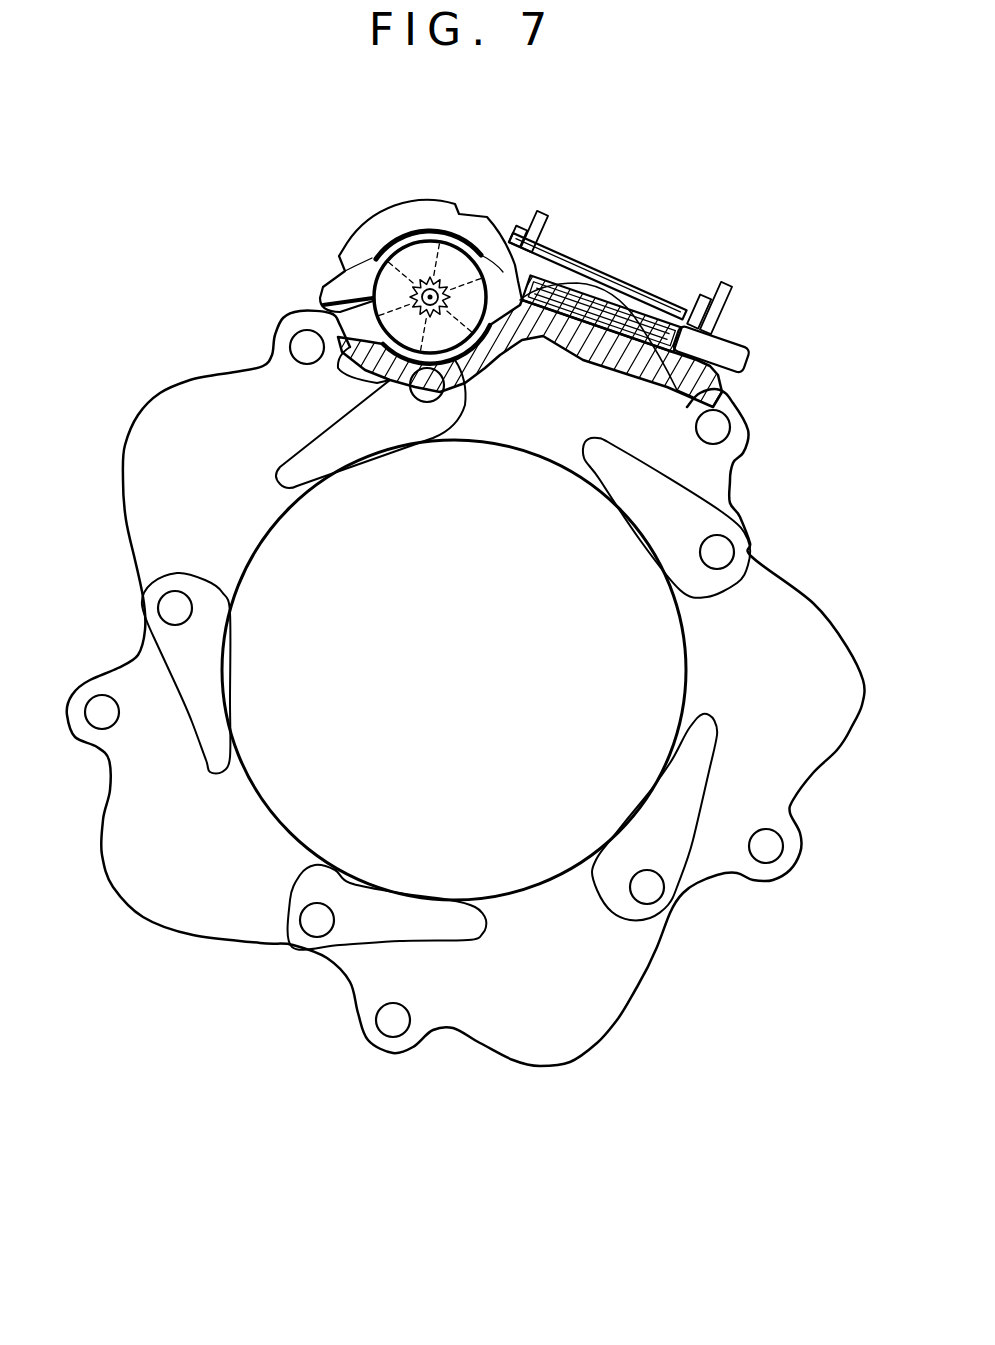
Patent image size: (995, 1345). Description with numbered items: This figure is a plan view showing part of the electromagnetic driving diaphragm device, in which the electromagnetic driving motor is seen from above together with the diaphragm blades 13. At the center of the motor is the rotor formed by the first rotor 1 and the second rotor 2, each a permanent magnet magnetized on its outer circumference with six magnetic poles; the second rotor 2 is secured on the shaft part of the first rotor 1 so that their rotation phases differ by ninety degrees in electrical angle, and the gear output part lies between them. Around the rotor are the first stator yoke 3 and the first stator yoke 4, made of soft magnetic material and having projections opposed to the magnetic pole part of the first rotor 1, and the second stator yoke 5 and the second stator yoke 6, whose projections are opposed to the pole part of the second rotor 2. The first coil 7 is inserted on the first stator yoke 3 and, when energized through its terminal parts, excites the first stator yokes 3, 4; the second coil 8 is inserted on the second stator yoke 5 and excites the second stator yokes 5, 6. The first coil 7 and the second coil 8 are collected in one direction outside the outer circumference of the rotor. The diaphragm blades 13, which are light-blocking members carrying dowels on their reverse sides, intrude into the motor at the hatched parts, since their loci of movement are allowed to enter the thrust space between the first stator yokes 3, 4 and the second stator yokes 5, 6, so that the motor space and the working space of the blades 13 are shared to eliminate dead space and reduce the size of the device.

The first rotor 1 is at (444, 239).
The second rotor 2 is at (437, 248).
The first stator yoke 3 is at (421, 221).
The second stator yoke 5 is at (417, 214).
The first stator yoke 4 is at (541, 340).
The second stator yoke 6 is at (715, 387).
The first coil 7 is at (541, 297).
The second coil 8 is at (613, 277).
The diaphragm blades 13 is at (170, 407).